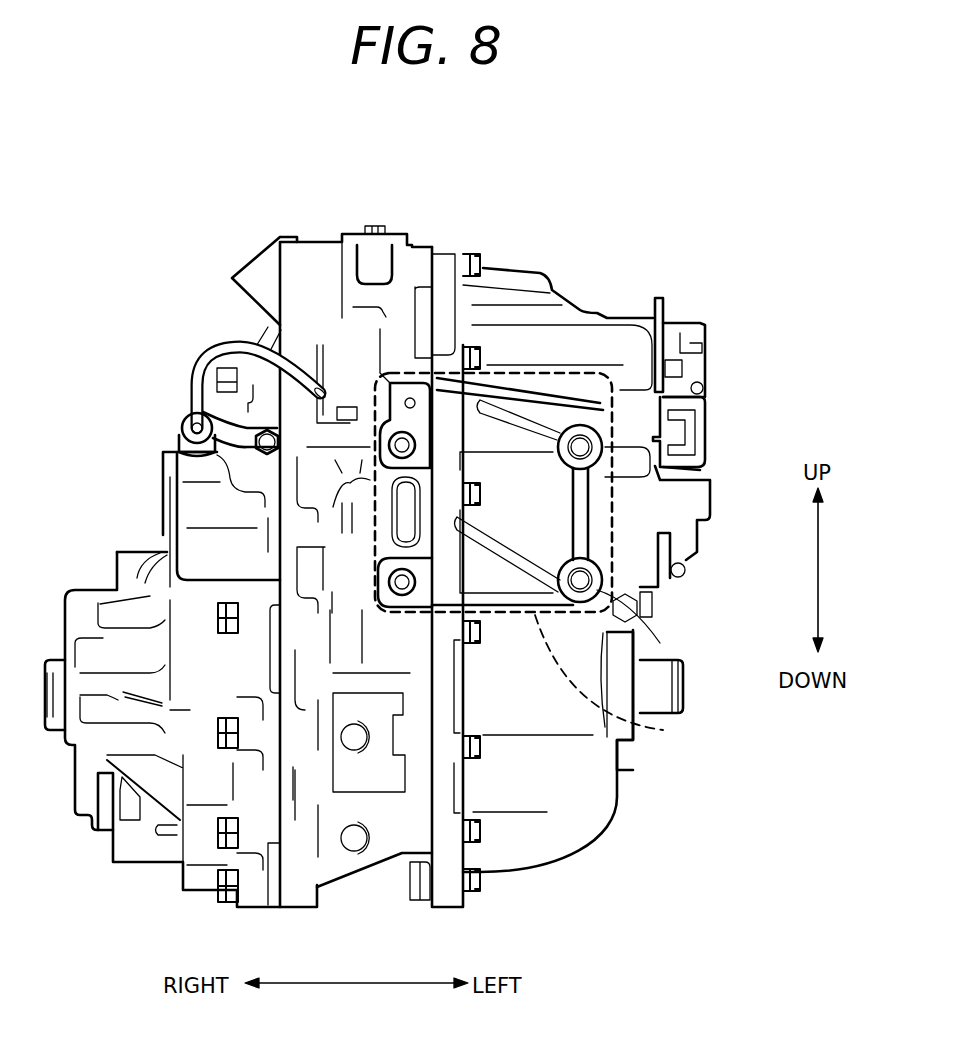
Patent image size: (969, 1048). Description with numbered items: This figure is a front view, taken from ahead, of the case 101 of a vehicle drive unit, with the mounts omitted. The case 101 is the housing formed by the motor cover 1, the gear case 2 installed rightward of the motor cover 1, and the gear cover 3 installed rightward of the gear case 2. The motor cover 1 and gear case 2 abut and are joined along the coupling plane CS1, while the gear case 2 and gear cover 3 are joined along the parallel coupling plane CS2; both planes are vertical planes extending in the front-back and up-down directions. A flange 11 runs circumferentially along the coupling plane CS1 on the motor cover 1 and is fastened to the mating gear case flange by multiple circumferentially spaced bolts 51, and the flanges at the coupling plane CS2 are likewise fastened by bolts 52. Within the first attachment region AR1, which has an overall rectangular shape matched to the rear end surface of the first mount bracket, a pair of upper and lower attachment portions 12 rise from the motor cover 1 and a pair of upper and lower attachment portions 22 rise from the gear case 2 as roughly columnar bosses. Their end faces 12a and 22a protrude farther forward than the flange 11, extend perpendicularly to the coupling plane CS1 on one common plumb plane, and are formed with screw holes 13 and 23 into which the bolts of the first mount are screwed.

The case 101 is at (688, 250).
The motor cover 1 is at (515, 343).
The gear case 2 is at (310, 279).
The gear cover 3 is at (195, 505).
The flange 11 is at (443, 265).
The attachment portion 12 is at (428, 265).
The end face 12a is at (665, 385).
The screw hole 13 is at (607, 587).
The attachment portion 22 is at (395, 440).
The end face 22a is at (385, 440).
The screw hole 23 is at (390, 583).
The bolt 51 is at (478, 262).
The bolt 52 is at (218, 612).
The first attachment region AR1 is at (543, 560).
The coupling plane CS1 is at (440, 712).
The coupling plane CS2 is at (278, 553).